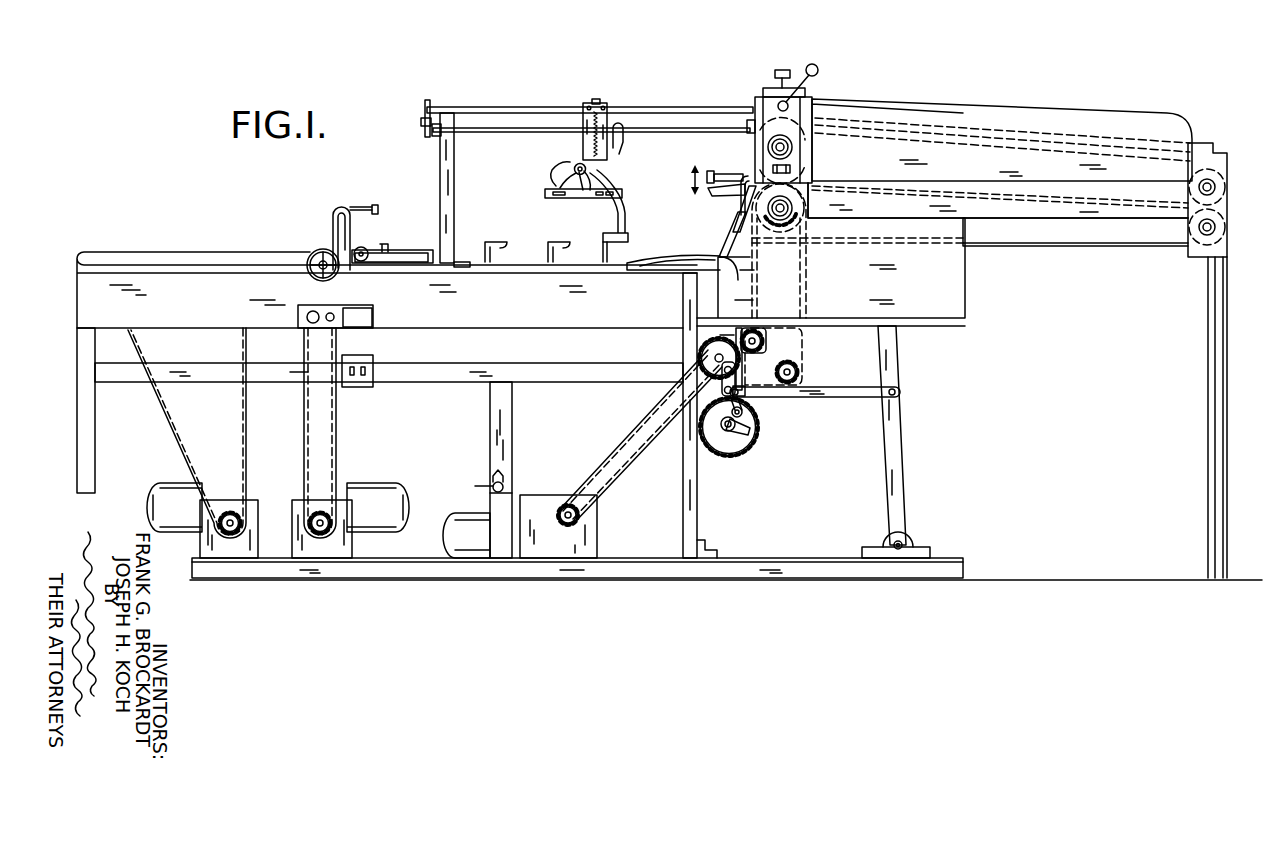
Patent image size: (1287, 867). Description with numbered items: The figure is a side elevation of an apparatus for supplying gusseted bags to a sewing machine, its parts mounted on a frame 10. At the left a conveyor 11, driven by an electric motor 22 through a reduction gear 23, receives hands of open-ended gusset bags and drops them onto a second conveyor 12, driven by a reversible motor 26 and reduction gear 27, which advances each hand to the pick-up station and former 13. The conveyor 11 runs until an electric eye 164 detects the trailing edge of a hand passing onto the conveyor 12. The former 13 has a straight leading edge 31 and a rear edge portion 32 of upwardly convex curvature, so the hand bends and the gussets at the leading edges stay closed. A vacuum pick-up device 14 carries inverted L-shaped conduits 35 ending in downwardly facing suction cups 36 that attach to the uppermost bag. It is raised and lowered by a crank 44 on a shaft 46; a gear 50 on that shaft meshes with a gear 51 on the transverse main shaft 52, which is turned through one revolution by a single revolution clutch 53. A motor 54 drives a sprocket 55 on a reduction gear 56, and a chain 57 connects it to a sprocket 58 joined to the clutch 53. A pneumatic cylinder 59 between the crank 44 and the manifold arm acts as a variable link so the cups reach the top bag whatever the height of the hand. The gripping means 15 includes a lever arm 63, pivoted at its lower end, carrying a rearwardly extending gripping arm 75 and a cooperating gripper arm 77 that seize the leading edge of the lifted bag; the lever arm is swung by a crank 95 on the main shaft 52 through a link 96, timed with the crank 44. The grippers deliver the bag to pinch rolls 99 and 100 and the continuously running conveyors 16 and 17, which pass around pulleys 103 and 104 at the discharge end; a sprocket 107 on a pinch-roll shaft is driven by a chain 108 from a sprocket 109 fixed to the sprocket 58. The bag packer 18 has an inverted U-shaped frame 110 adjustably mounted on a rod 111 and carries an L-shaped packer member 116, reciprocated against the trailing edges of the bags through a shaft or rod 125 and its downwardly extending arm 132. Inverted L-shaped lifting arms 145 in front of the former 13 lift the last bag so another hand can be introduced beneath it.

The frame 10 is at (446, 586).
The conveyor 11 is at (236, 247).
The second conveyor 12 is at (468, 253).
The pick-up station and former 13 is at (687, 250).
The vacuum pick-up device 14 is at (706, 166).
The grippers 15 is at (727, 210).
The conveyor 16 is at (908, 148).
The conveyor 17 is at (896, 195).
The bag packer 18 is at (575, 208).
The electric motor 22 is at (164, 483).
The reduction gear 23 is at (232, 553).
The reversible motor 26 is at (386, 484).
The reduction gear 27 is at (322, 553).
The leading edge 31 is at (632, 260).
The rear edge portion 32 is at (717, 407).
The conduits 35 is at (720, 173).
The suction cups 36 is at (709, 193).
The crank 44 is at (735, 425).
The shaft 46 is at (745, 437).
The gear 50 is at (738, 450).
The gear 51 is at (722, 342).
The transverse main shaft 52 is at (733, 372).
The single revolution clutch 53 is at (702, 350).
The motor 54 is at (456, 515).
The sprocket 55 is at (561, 527).
The reduction gear 56 is at (543, 496).
The chain 57 is at (638, 446).
The sprocket 58 is at (720, 370).
The pneumatic cylinders 59 is at (758, 330).
The lever arm 63 is at (897, 422).
The gripping arm 75 is at (738, 218).
The gripper arm 77 is at (748, 175).
The crank 95 is at (742, 398).
The link 96 is at (845, 398).
The pinch roll 99 is at (793, 168).
The pinch roll 100 is at (780, 232).
The pulley 103 is at (1227, 182).
The pulley 104 is at (1227, 224).
The sprocket 107 is at (800, 240).
The chain 108 is at (805, 291).
The sprocket 109 is at (724, 386).
The inverted U-shaped frame 110 is at (601, 103).
The bar or rod 111 is at (537, 107).
The packer member 116 is at (616, 192).
The shaft or rod 125 is at (542, 133).
The arm 132 is at (620, 145).
The lifting arms 145 is at (547, 250).
The electric eye 164 is at (378, 208).